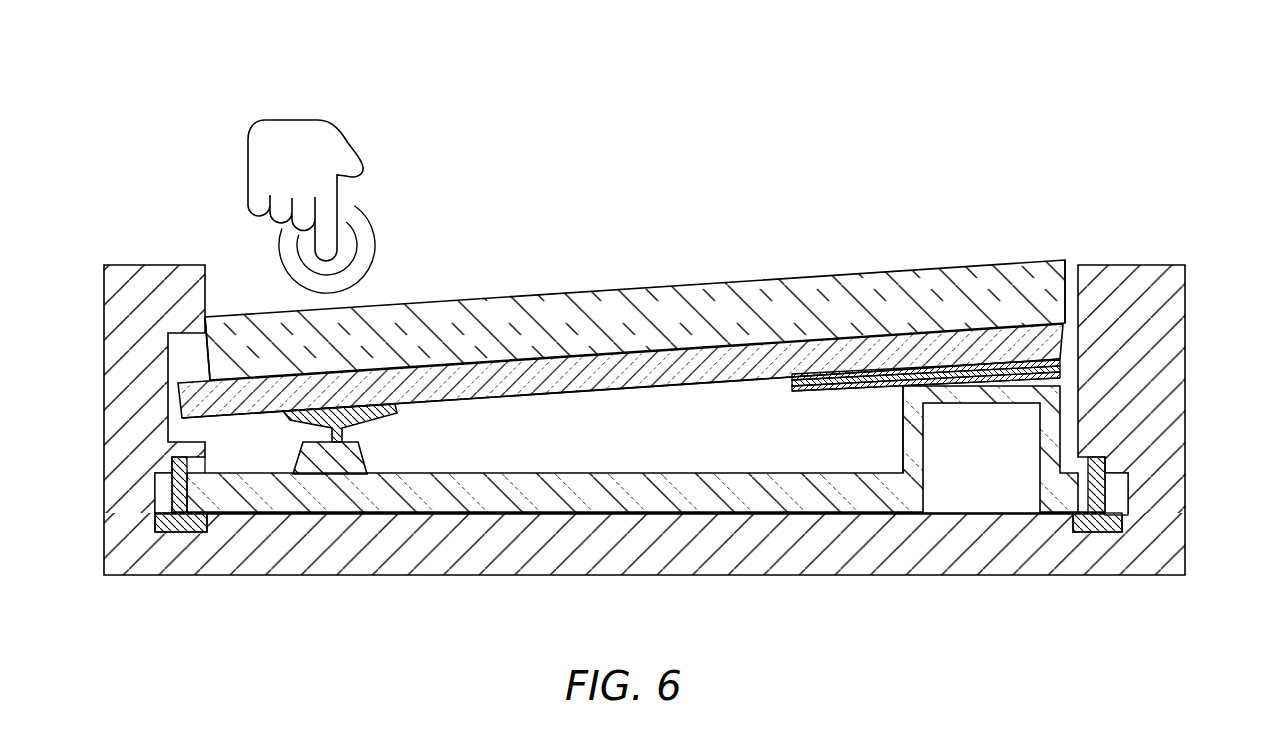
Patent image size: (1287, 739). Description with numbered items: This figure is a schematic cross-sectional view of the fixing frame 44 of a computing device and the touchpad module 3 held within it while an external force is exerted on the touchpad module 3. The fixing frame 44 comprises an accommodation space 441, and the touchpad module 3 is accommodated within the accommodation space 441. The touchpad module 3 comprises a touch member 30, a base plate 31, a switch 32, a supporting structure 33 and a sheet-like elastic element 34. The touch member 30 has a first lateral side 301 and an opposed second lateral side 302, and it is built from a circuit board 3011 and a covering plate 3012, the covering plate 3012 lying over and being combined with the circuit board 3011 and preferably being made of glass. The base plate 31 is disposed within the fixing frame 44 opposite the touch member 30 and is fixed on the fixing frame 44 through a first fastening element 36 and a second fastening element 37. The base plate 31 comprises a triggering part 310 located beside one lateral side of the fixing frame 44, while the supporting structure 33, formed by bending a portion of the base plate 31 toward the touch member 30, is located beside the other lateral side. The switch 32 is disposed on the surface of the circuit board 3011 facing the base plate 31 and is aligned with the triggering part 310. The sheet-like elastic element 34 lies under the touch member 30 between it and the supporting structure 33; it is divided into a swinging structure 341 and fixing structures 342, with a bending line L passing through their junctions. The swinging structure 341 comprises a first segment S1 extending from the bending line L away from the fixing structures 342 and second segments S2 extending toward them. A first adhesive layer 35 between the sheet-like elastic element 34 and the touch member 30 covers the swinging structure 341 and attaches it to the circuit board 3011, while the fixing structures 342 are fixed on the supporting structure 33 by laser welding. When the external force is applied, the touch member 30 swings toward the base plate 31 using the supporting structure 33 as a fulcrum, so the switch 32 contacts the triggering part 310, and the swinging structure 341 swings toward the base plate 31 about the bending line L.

The touchpad module 3 is at (637, 230).
The touch member 30 is at (637, 230).
The first lateral side 301 is at (1063, 286).
The second lateral side 302 is at (214, 349).
The circuit board 3011 is at (427, 385).
The covering plate 3012 is at (518, 327).
The base plate 31 is at (597, 495).
The triggering part 310 is at (343, 444).
The switch 32 is at (570, 388).
The supporting structure 33 is at (1050, 420).
The sheet-like elastic element 34 is at (926, 265).
The swinging structure 341 is at (926, 284).
The fixing structures 342 is at (997, 365).
The first adhesive layer 35 is at (1062, 361).
The first fastening element 36 is at (1103, 528).
The second fastening element 37 is at (178, 534).
The fixing frame 44 is at (987, 553).
The accommodation space 441 is at (770, 439).
The first segment S1 is at (862, 372).
The second segments S2 is at (930, 368).
The bending line L is at (895, 390).